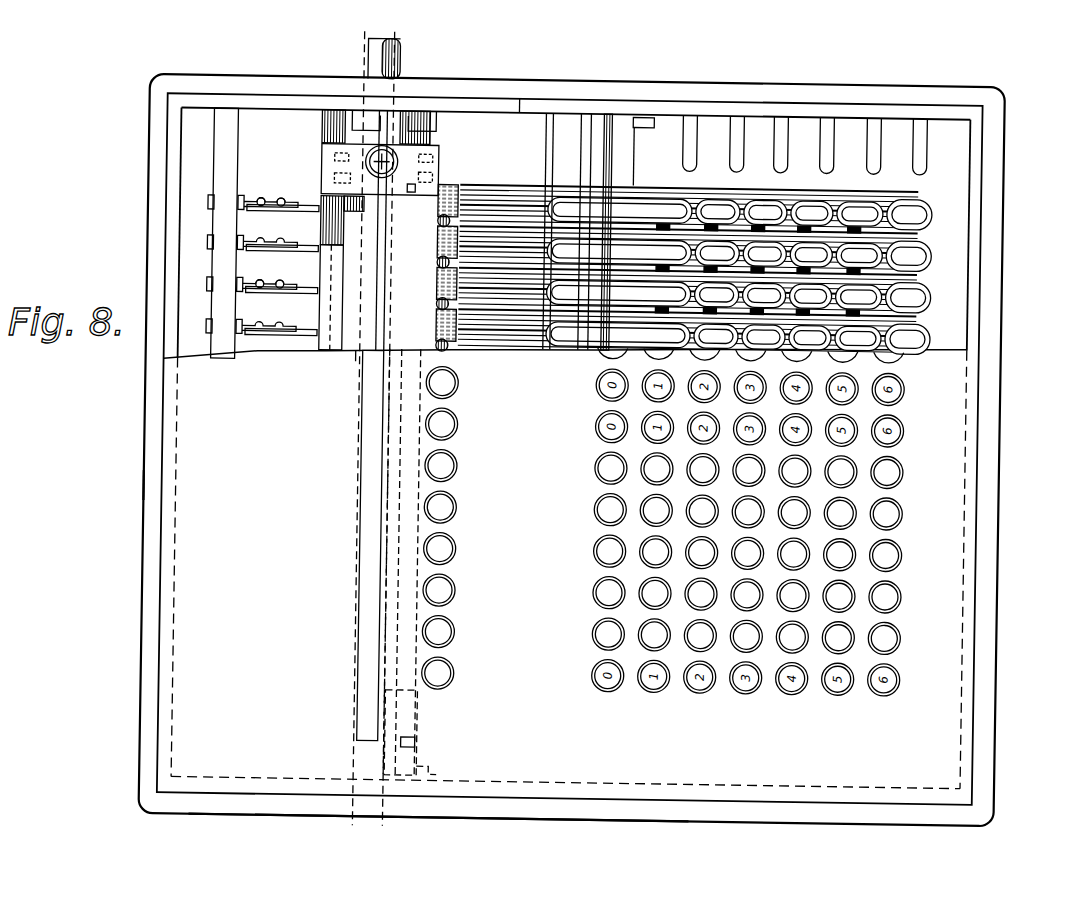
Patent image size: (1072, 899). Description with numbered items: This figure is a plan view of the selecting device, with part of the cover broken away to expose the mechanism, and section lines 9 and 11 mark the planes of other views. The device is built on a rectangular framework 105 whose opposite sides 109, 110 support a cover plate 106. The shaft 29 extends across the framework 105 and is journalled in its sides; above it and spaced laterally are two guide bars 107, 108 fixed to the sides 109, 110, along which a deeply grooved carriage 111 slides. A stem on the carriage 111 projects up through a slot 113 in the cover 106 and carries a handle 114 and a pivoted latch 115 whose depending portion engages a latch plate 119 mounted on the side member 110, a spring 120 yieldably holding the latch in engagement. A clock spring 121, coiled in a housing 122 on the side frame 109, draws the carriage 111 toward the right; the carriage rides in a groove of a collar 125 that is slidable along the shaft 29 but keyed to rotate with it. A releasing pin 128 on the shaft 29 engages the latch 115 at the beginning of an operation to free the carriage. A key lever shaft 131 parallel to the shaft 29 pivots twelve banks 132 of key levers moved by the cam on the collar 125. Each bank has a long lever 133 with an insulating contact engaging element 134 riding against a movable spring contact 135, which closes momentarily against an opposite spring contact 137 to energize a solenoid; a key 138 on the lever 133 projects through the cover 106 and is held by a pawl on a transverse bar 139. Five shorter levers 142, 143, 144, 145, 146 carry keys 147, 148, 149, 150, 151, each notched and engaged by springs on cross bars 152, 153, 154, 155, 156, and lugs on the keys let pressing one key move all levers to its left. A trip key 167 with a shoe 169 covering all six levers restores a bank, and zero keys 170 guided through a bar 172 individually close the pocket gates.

The section line 9 is at (213, 216).
The section line 11 is at (414, 27).
The shaft 29 is at (372, 63).
The rectangular framework 105 is at (146, 488).
The cover plate 106 is at (226, 127).
The guide bar 107 is at (323, 128).
The guide bar 108 is at (431, 137).
The side member of framework 109 is at (303, 803).
The side member of framework 110 is at (524, 88).
The carriage 111 is at (324, 179).
The slot 113 is at (369, 670).
The handle 114 is at (399, 159).
The latch 115 is at (367, 150).
The latch plate 119 is at (372, 112).
The spring 120 is at (418, 182).
The clock spring 121 is at (373, 345).
The spring housing 122 is at (430, 705).
The collar 125 is at (416, 126).
The releasing pin 128 is at (396, 108).
The key lever shaft 131 is at (609, 123).
The banks of key levers 132 is at (472, 185).
The key lever 133 is at (702, 174).
The contact engaging element 134 is at (252, 283).
The movable spring contact 135 is at (266, 255).
The spring contact 137 is at (214, 202).
The key 138 is at (655, 682).
The transverse bar 139 is at (688, 125).
The key lever 142 is at (741, 206).
The key lever 143 is at (764, 274).
The key lever 144 is at (811, 275).
The key lever 145 is at (901, 184).
The key lever 146 is at (951, 196).
The key 147 is at (702, 683).
The key 148 is at (748, 683).
The key 149 is at (796, 683).
The key 150 is at (845, 684).
The key 151 is at (893, 684).
The cross bar 152 is at (739, 121).
The cross bar 153 is at (783, 122).
The cross bar 154 is at (829, 124).
The cross bar 155 is at (876, 124).
The cross bar 156 is at (923, 141).
The trip key 167 is at (457, 625).
The shoe 169 is at (451, 332).
The zero key 170 is at (602, 660).
The bar 172 is at (621, 164).